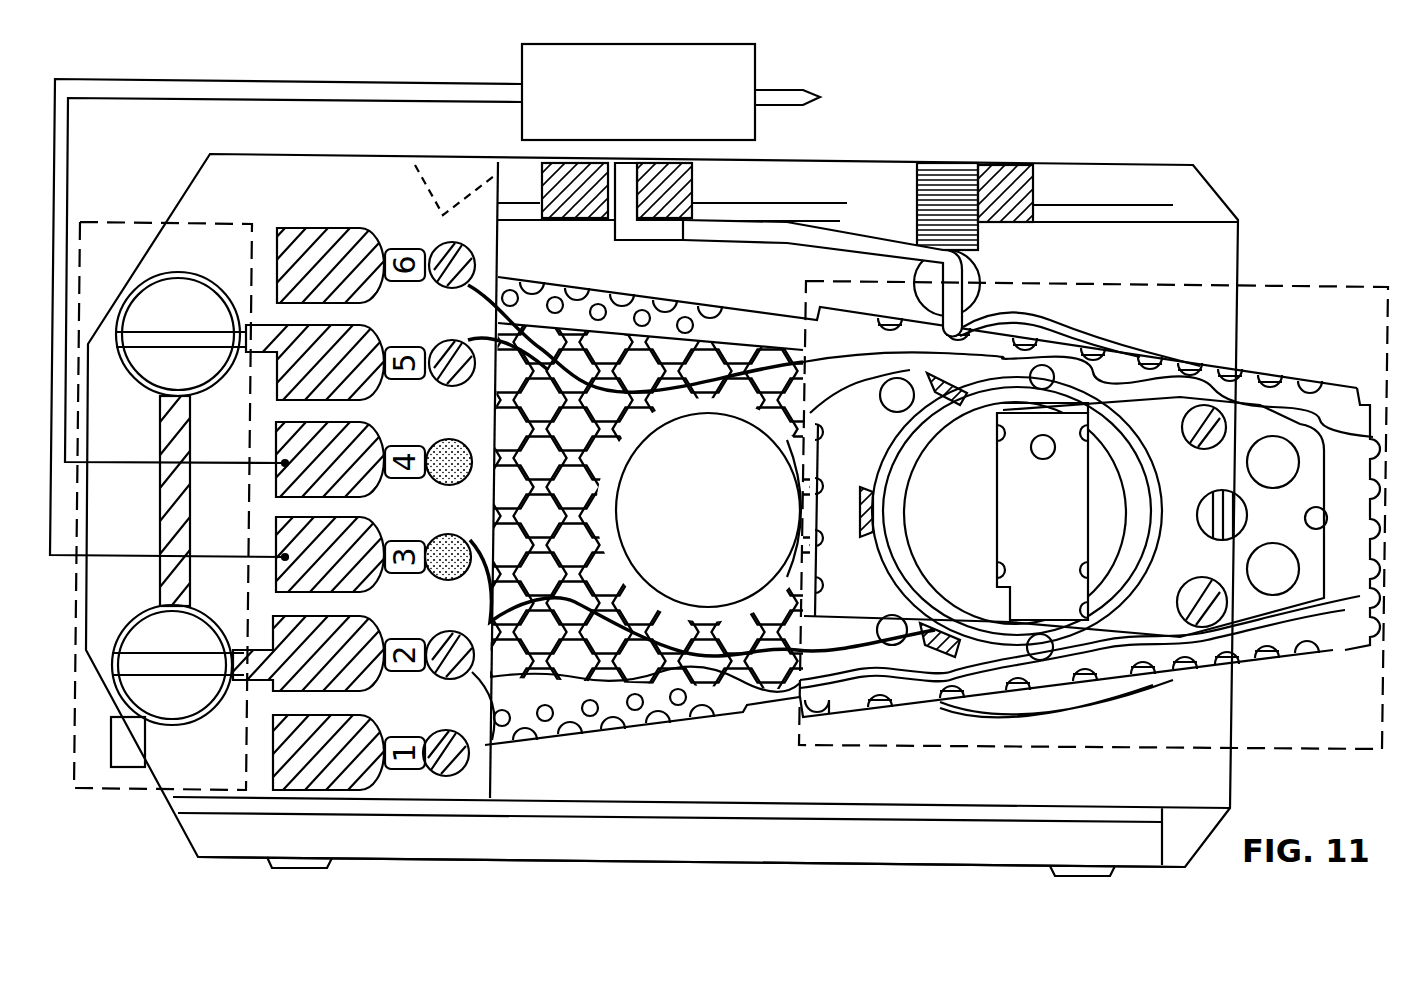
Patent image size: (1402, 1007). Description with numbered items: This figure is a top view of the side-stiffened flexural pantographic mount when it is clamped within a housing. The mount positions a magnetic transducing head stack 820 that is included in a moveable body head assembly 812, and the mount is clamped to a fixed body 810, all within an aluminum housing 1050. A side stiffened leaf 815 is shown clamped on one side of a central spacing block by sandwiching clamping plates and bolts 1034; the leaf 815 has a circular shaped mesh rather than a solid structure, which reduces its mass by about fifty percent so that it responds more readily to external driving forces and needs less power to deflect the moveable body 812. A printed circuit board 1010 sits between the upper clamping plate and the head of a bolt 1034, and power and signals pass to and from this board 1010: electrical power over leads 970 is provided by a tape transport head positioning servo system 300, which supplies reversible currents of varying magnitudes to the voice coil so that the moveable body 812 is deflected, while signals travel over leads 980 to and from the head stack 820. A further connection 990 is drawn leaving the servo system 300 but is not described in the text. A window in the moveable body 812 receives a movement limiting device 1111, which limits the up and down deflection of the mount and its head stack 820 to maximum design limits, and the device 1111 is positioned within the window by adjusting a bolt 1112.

The tape transport head positioning servo system 300 is at (747, 50).
The leads 970 is at (217, 102).
The servo output signal 990 is at (820, 97).
The printed circuit board 1010 is at (383, 182).
The bolts 1034 is at (194, 288).
The bolt 1112 is at (978, 230).
The side stiffened leaf 815 is at (737, 320).
The movement limiting device 1111 is at (983, 303).
The leads 980 is at (1287, 400).
The magnetic transducing head stack 820 is at (1373, 407).
The fixed body 810 is at (107, 790).
The moveable body head assembly 812 is at (1062, 750).
The aluminum housing 1050 is at (463, 860).